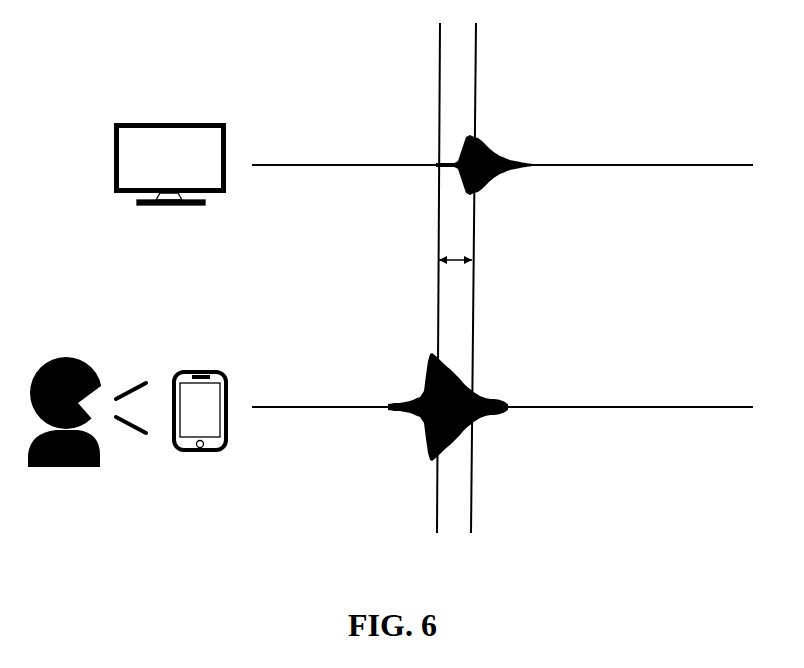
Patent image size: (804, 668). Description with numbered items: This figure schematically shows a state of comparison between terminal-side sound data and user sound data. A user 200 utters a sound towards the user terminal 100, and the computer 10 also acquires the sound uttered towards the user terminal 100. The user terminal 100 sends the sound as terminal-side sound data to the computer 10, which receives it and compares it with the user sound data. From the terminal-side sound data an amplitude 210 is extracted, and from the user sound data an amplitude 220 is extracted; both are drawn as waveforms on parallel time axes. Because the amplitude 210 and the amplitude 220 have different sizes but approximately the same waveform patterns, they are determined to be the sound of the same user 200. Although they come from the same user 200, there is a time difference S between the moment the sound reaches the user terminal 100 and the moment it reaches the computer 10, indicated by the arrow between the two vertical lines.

The computer 10 is at (215, 133).
The user terminal 100 is at (214, 398).
The user 200 is at (72, 362).
The amplitude 210 is at (485, 400).
The amplitude 220 is at (487, 150).
The time difference S is at (455, 252).